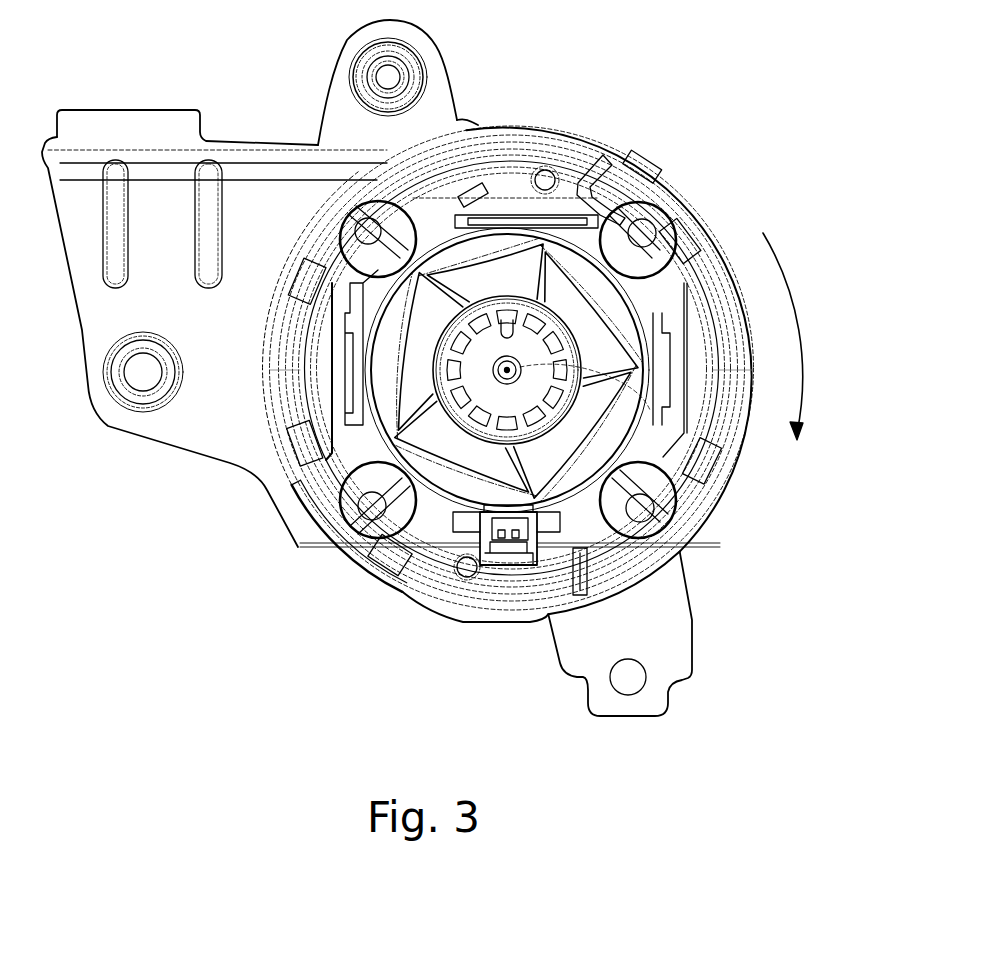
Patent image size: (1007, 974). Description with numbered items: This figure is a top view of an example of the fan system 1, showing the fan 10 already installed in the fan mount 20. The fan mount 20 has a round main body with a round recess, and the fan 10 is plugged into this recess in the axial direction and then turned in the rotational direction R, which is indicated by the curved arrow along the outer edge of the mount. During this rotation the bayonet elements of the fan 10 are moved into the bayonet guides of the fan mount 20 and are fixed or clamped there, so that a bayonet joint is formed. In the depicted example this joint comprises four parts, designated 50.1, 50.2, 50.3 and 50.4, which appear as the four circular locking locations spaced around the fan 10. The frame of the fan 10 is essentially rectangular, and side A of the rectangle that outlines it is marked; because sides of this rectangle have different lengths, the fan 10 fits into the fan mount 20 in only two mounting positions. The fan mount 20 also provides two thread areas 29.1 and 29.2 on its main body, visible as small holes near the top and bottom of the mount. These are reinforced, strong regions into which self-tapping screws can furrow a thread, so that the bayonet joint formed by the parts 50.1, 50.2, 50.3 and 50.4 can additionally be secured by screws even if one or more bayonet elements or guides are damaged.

The fan system 1 is at (652, 108).
The fan mount 20 is at (432, 112).
The fan 10 is at (500, 388).
The thread area 29.1 is at (471, 580).
The thread area 29.2 is at (548, 168).
The part of the bayonet joint 50.1 is at (380, 238).
The part of the bayonet joint 50.2 is at (687, 193).
The part of the bayonet joint 50.3 is at (675, 520).
The part of the bayonet joint 50.4 is at (318, 560).
The rotational direction R is at (805, 360).
The side A of the rectangle A is at (735, 483).